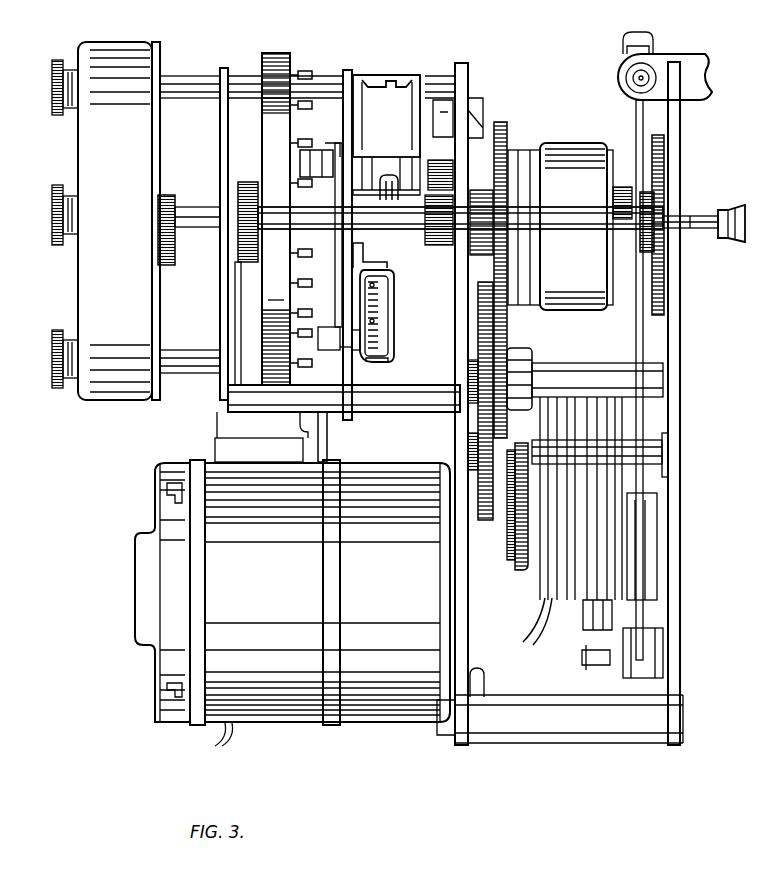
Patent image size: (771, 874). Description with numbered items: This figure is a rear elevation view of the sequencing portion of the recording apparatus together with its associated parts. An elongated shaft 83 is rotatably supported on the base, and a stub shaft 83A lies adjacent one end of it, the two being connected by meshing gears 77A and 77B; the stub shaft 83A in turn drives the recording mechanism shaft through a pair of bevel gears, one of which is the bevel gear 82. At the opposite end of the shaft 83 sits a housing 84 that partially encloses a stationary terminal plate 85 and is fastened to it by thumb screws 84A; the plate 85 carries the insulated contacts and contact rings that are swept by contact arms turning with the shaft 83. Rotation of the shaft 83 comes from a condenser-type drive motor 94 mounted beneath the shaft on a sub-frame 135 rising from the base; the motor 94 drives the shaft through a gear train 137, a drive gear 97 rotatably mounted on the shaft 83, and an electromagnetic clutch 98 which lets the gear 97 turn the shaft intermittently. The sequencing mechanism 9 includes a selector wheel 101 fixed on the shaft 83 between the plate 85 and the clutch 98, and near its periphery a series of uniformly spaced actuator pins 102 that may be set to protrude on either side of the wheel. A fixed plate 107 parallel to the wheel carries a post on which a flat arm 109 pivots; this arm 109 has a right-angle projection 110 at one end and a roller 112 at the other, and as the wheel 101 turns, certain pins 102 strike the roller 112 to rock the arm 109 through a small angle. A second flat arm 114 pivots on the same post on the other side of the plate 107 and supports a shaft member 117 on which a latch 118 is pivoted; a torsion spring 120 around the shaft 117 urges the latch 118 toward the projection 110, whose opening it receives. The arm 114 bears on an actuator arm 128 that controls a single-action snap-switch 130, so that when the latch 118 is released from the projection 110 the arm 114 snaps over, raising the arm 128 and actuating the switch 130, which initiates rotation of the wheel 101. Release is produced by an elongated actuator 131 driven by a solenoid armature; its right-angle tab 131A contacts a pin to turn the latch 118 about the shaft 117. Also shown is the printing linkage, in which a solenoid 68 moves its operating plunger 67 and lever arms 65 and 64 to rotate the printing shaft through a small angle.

The sequencing mechanism 9 is at (380, 72).
The lever arm 64 is at (700, 92).
The lever arm 65 is at (636, 337).
The operating plunger 67 is at (587, 618).
The solenoid 68 is at (603, 440).
The gear 77A is at (656, 222).
The gear 77B is at (665, 150).
The bevel gear 82 is at (732, 242).
The elongated shaft 83 is at (180, 208).
The stub shaft 83A is at (585, 232).
The housing 84 is at (118, 42).
The thumb screws 84A is at (56, 118).
The terminal plate 85 is at (160, 60).
The drive motor 94 is at (262, 576).
The drive gear 97 is at (500, 122).
The electromagnetic clutch 98 is at (562, 143).
The selector wheel 101 is at (276, 53).
The actuator pins 102 is at (298, 73).
The fixed plate 107 is at (352, 140).
The flat arm 109 is at (340, 277).
The projection 110 is at (396, 315).
The roller 112 is at (316, 150).
The flat arm 114 is at (386, 362).
The shaft member 117 is at (374, 280).
The latch 118 is at (371, 253).
The torsion spring 120 is at (374, 320).
The actuator arm 128 is at (398, 182).
The snap-switch 130 is at (393, 108).
The elongated actuator 131 is at (327, 450).
The tab 131A is at (327, 332).
The sub-frame 135 is at (468, 63).
The gear train 137 is at (508, 343).